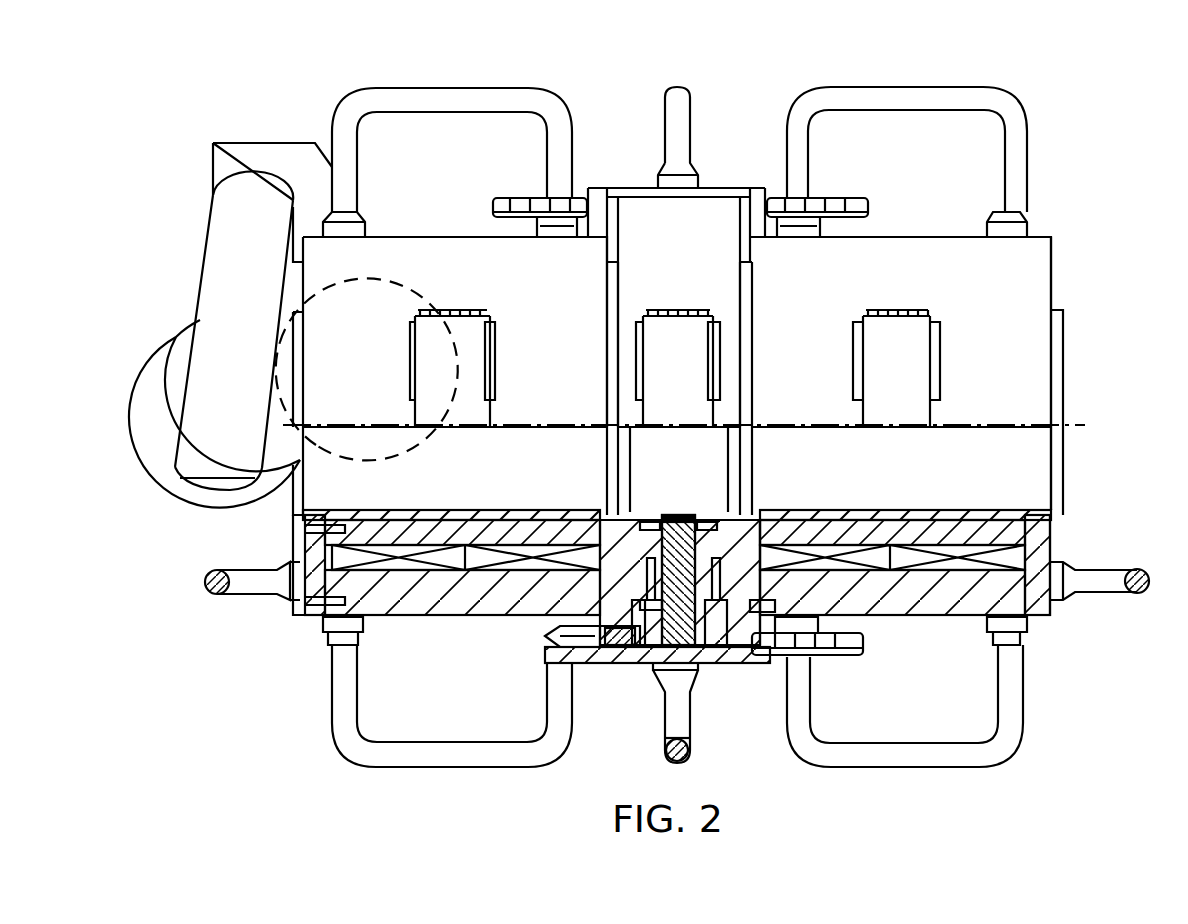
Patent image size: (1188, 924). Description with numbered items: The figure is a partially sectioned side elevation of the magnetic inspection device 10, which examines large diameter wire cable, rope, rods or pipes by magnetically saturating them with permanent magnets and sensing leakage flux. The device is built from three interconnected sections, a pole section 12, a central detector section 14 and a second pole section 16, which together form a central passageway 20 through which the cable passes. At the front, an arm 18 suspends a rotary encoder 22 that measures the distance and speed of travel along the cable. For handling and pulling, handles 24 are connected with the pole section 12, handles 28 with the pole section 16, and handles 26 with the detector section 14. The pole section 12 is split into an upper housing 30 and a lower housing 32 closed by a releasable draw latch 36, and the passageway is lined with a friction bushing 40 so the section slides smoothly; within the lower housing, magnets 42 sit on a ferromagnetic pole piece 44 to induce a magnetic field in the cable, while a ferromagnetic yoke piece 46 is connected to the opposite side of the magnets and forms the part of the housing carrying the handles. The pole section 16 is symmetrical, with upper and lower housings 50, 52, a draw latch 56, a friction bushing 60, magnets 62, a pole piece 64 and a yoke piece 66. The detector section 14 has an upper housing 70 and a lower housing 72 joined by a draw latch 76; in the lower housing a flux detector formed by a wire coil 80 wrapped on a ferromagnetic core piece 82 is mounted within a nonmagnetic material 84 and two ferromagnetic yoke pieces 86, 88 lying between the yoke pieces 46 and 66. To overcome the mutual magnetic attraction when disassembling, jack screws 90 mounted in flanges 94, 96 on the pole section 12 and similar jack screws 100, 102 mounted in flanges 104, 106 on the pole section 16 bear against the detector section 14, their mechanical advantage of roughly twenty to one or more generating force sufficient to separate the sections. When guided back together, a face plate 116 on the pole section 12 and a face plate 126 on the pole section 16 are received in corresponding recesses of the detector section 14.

The magnetic inspection device 10 is at (1065, 107).
The pole section 12 is at (469, 219).
The detector section 14 is at (634, 176).
The pole section 16 is at (934, 209).
The arm 18 is at (218, 242).
The central passageway 20 is at (460, 481).
The rotary encoder 22 is at (160, 352).
The handles 24 is at (516, 90).
The handles 26 is at (680, 88).
The handles 28 is at (918, 90).
The upper housing 30 is at (388, 284).
The lower housing 32 is at (308, 556).
The draw latch 36 is at (470, 370).
The friction bushing 40 is at (350, 510).
The magnets 42 is at (470, 572).
The pole piece 44 is at (498, 530).
The yoke piece 46 is at (434, 604).
The upper housing 50 is at (1016, 280).
The lower housing 52 is at (1040, 556).
The draw latch 56 is at (912, 366).
The friction bushing 60 is at (968, 510).
The magnets 62 is at (882, 562).
The pole piece 64 is at (820, 532).
The yoke piece 66 is at (928, 606).
The upper housing 70 is at (696, 243).
The lower housing 72 is at (616, 664).
The draw latch 76 is at (688, 330).
The wire coil 80 is at (674, 515).
The core piece 82 is at (700, 522).
The nonmagnetic material 84 is at (651, 525).
The yoke piece 86 is at (726, 658).
The yoke piece 88 is at (648, 663).
The jack screw 90 is at (536, 198).
The flange 94 is at (594, 232).
The flange 96 is at (560, 648).
The jack screw 100 is at (828, 200).
The jack screw 102 is at (828, 656).
The flange 104 is at (760, 192).
The flange 106 is at (760, 662).
The face plate 116 is at (606, 300).
The face plate 126 is at (743, 310).